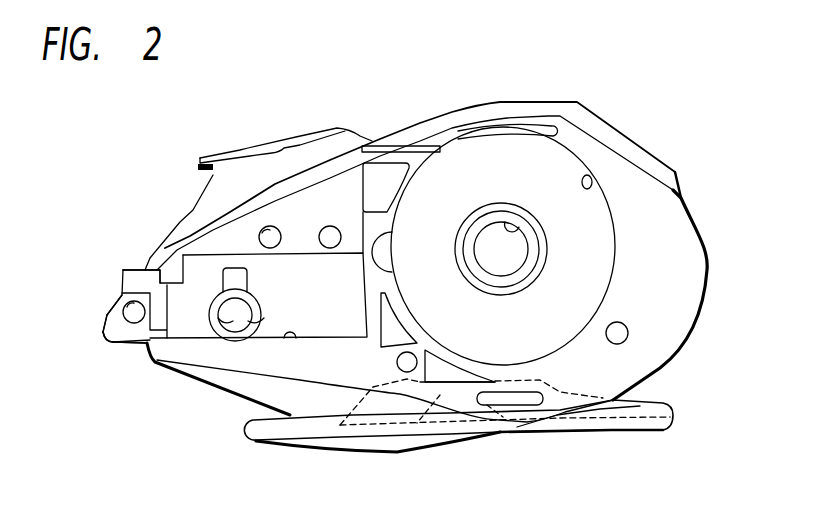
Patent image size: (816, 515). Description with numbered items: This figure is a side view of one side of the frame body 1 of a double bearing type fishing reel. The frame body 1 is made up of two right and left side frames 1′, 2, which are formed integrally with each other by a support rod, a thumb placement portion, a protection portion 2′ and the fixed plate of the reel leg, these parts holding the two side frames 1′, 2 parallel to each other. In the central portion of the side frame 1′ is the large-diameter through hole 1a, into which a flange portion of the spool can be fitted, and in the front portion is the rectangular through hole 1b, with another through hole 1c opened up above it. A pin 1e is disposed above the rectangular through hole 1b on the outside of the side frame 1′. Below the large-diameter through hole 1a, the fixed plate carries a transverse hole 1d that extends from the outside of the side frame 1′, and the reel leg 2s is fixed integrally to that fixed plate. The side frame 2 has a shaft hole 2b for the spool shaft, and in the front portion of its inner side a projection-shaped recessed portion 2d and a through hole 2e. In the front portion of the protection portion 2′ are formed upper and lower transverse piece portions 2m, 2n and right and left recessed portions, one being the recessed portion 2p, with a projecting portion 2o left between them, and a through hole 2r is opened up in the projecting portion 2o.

The frame body 1 is at (152, 190).
The side frame 1′ is at (380, 122).
The through hole 1a is at (593, 187).
The rectangular through hole 1b is at (292, 344).
The through hole 1c is at (265, 230).
The transverse hole 1d is at (537, 412).
The pin 1e is at (327, 226).
The side frame 2 is at (212, 387).
The protection portion 2′ is at (115, 350).
The shaft hole 2b is at (525, 218).
The projection-shaped recessed portion 2d is at (243, 330).
The through hole 2e is at (228, 330).
The upper transverse piece portion 2m is at (128, 280).
The lower transverse piece portion 2n is at (103, 333).
The projecting portion 2o is at (110, 310).
The recessed portion 2p is at (107, 322).
The through hole 2r is at (123, 302).
The reel leg 2s is at (277, 445).